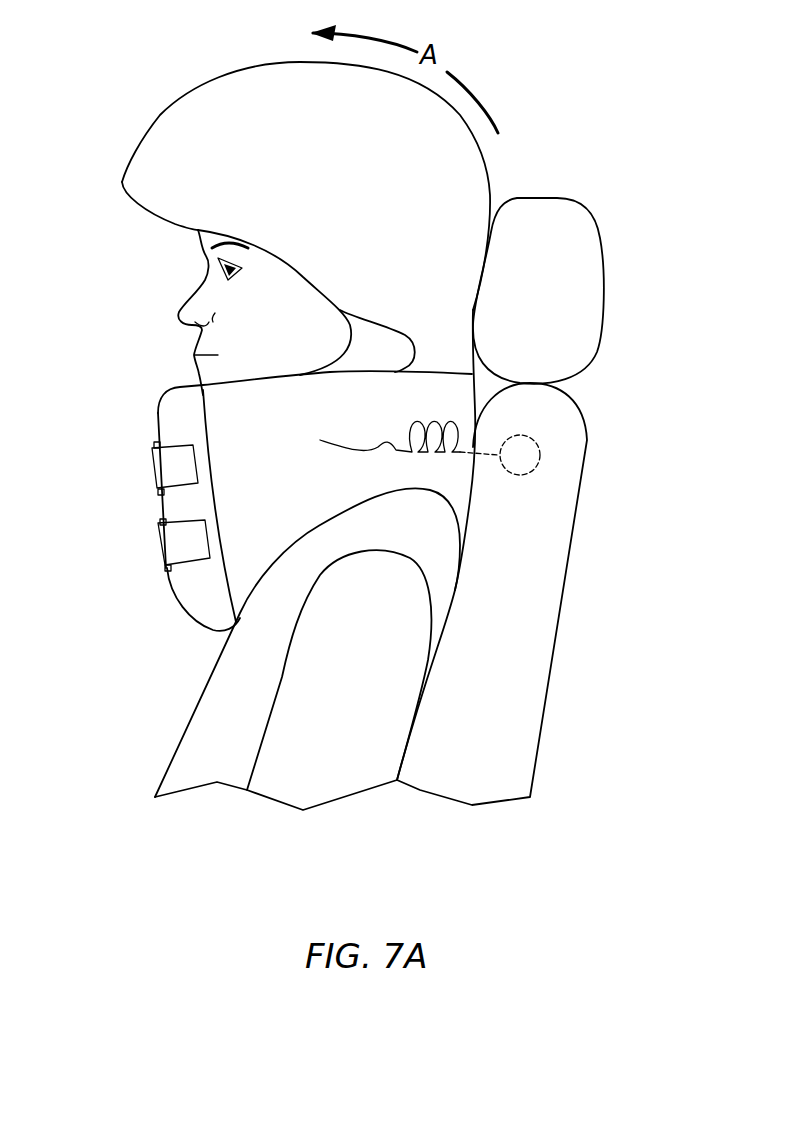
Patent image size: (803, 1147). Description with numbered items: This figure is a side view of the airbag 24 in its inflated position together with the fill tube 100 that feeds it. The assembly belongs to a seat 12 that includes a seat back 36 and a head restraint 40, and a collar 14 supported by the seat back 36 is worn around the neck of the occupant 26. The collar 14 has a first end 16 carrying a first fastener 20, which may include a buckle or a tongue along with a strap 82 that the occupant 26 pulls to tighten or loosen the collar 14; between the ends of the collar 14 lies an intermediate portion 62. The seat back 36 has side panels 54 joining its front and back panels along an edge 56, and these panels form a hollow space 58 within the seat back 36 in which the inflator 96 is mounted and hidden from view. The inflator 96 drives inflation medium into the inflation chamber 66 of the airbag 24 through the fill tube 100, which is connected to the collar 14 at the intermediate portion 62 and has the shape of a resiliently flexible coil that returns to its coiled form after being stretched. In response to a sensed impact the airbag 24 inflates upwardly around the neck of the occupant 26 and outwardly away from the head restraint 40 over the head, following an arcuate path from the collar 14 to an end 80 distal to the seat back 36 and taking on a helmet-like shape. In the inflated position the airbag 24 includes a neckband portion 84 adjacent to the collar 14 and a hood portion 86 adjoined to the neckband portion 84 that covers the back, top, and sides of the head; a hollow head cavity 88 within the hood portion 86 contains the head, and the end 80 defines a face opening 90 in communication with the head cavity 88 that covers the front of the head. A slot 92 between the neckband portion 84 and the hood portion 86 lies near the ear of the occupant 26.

The seat 12 is at (607, 168).
The collar 14 is at (167, 390).
The first end 16 is at (177, 422).
The first fastener 20 is at (142, 471).
The airbag 24 is at (181, 94).
The occupant 26 is at (177, 313).
The seat back 36 is at (529, 598).
The head restraint 40 is at (598, 232).
The side panels 54 is at (535, 563).
The edge 56 is at (577, 523).
The space 58 is at (493, 757).
The intermediate portion 62 is at (258, 543).
The inflation chamber 66 is at (173, 153).
The end 80 is at (122, 182).
The strap 82 is at (163, 462).
The neckband portion 84 is at (443, 358).
The hood portion 86 is at (253, 107).
The head cavity 88 is at (283, 303).
The face opening 90 is at (199, 268).
The slot 92 is at (383, 348).
The inflator 96 is at (540, 448).
The fill tube 100 is at (390, 438).